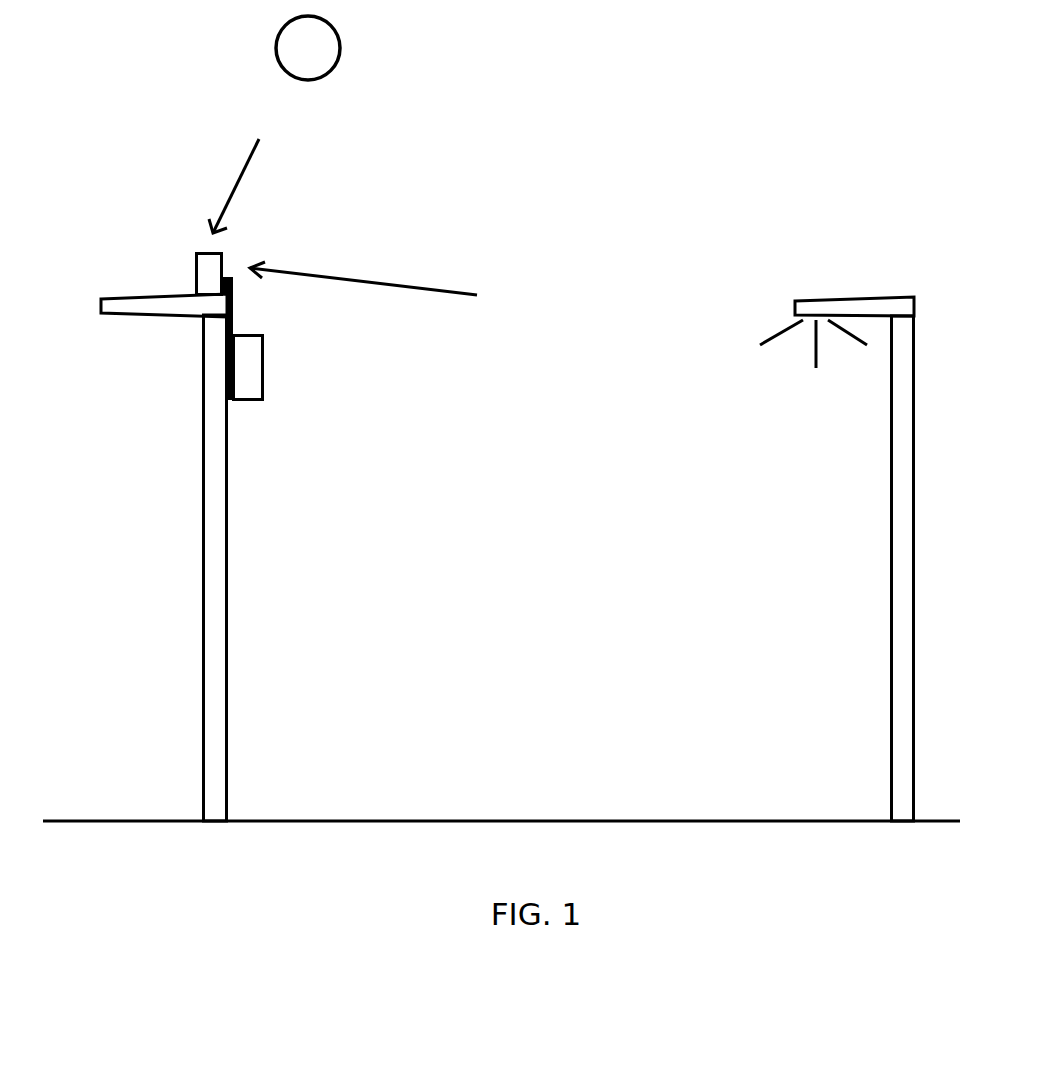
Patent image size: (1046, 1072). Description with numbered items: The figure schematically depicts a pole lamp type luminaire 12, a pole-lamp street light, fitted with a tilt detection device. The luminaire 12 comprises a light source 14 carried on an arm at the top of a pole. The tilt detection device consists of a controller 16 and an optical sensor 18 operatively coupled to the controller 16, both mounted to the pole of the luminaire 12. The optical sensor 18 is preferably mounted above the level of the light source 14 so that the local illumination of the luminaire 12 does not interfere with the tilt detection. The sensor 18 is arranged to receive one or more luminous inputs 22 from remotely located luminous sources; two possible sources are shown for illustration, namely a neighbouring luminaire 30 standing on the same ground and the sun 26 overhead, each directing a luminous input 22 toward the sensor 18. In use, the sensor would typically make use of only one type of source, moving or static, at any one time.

The pole lamp type luminaire 12 is at (220, 643).
The light source 14 is at (163, 288).
The controller 16 is at (255, 367).
The optical sensor 18 is at (204, 252).
The luminous inputs 22 is at (252, 148).
The sun 26 is at (342, 50).
The neighbouring luminaire 30 is at (892, 485).